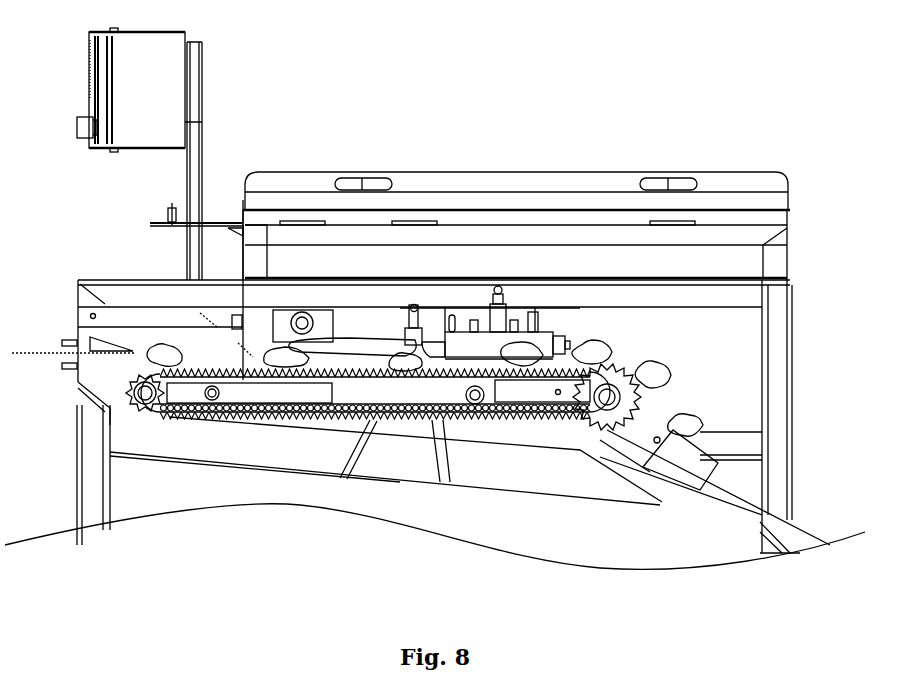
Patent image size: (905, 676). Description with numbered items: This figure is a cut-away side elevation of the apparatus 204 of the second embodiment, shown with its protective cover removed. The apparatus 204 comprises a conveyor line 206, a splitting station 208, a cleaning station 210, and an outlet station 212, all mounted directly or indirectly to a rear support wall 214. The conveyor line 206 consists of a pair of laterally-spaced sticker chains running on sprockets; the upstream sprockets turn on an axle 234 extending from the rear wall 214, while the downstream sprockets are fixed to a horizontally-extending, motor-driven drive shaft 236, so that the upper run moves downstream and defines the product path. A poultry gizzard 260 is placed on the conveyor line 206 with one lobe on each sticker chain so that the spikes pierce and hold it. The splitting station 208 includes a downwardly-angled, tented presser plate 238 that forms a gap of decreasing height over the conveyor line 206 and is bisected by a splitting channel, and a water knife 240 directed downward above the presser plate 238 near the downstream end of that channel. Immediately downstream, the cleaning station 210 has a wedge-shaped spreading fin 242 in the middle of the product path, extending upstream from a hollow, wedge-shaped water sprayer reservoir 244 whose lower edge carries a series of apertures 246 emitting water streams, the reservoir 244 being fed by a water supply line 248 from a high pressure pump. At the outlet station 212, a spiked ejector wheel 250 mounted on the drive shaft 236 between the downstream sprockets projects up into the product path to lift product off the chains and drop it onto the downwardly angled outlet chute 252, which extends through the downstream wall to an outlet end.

The apparatus 204 is at (792, 166).
The conveyor line 206 is at (243, 419).
The splitting station 208 is at (369, 340).
The cleaning station 210 is at (535, 308).
The outlet station 212 is at (742, 481).
The rear support wall 214 is at (717, 363).
The axle 234 is at (146, 395).
The drive shaft 236 is at (605, 400).
The presser plate 238 is at (350, 343).
The water knife 240 is at (413, 328).
The spreading fin 242 is at (437, 347).
The water sprayer reservoir 244 is at (463, 343).
The apertures 246 is at (483, 357).
The water supply line 248 is at (497, 296).
The ejector wheel 250 is at (620, 375).
The outlet chute 252 is at (803, 540).
The poultry gizzard 260 is at (595, 355).